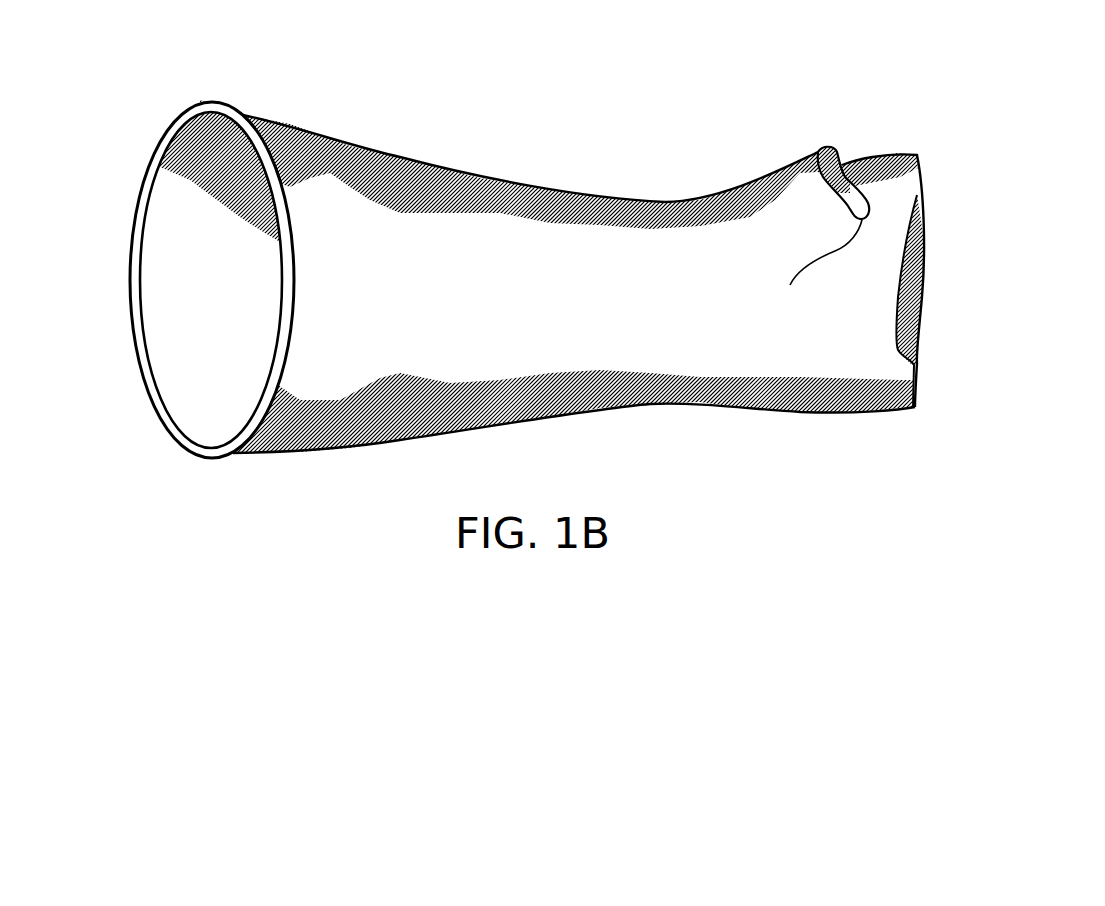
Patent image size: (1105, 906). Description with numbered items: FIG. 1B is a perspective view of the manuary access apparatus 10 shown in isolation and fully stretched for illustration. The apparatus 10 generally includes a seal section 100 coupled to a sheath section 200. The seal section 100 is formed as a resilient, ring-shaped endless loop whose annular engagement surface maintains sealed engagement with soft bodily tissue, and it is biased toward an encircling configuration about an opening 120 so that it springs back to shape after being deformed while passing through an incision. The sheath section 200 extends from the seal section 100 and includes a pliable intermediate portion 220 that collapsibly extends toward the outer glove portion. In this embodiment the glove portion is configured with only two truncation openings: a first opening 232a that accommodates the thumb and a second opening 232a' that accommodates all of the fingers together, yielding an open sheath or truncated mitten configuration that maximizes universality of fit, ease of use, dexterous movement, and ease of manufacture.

The manuary access apparatus 10 is at (552, 294).
The seal section 100 is at (552, 321).
The opening 120 is at (188, 310).
The sheath section 200 is at (563, 214).
The intermediate portion 220 is at (707, 357).
The first opening 232a is at (552, 270).
The second opening 232a' is at (552, 285).